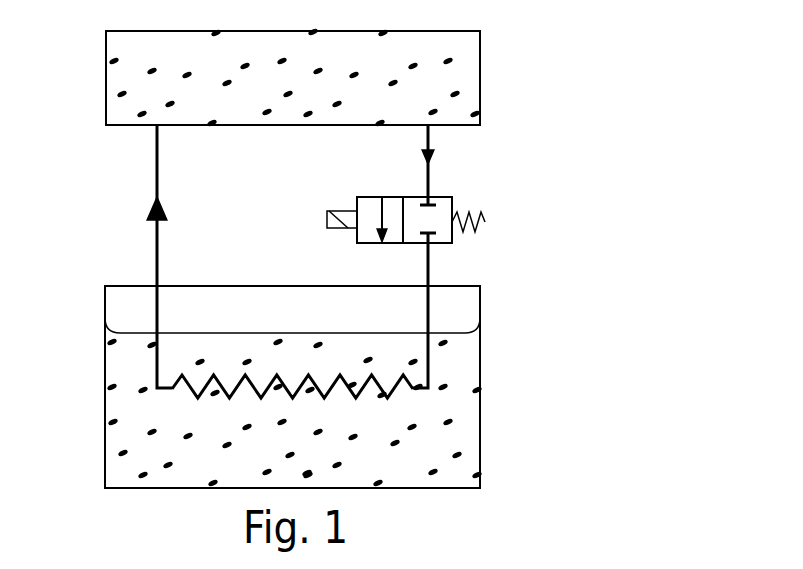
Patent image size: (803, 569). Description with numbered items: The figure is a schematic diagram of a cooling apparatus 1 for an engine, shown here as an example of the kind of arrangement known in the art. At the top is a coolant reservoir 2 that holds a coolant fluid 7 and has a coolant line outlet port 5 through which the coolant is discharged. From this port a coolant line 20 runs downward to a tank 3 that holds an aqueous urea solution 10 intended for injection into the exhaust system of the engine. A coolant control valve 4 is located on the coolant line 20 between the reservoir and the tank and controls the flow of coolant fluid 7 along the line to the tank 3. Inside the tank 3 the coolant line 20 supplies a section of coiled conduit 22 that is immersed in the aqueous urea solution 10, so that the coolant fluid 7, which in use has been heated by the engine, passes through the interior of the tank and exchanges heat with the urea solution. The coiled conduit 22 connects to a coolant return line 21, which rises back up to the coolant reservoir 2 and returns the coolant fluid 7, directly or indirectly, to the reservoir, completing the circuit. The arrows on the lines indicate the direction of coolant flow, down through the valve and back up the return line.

The cooling apparatus 1 is at (623, 50).
The coolant reservoir 2 is at (480, 55).
The tank 3 is at (480, 365).
The coolant control valve 4 is at (453, 202).
The coolant line outlet port 5 is at (428, 148).
The coolant fluid 7 is at (125, 44).
The aqueous urea solution 10 is at (450, 443).
The coolant line 20 is at (430, 265).
The coolant return line 21 is at (157, 250).
The coiled conduit 22 is at (262, 394).